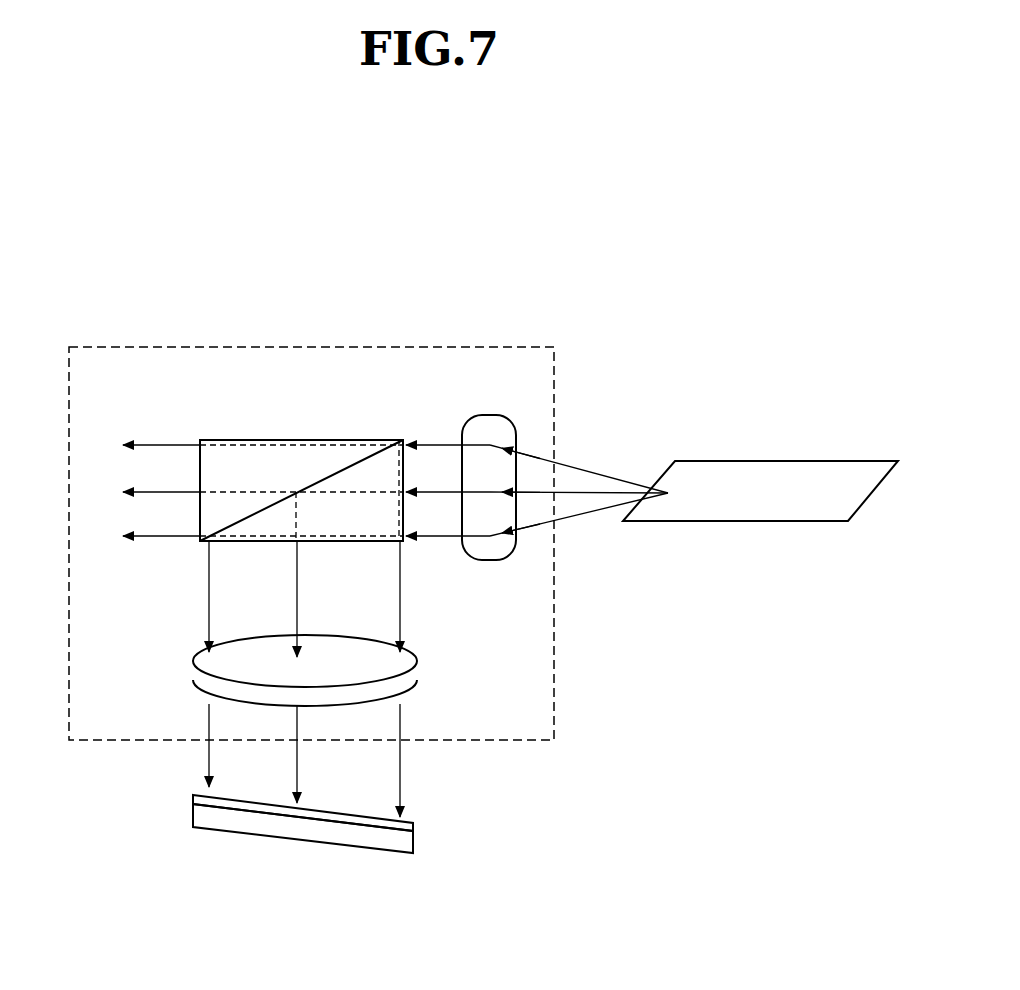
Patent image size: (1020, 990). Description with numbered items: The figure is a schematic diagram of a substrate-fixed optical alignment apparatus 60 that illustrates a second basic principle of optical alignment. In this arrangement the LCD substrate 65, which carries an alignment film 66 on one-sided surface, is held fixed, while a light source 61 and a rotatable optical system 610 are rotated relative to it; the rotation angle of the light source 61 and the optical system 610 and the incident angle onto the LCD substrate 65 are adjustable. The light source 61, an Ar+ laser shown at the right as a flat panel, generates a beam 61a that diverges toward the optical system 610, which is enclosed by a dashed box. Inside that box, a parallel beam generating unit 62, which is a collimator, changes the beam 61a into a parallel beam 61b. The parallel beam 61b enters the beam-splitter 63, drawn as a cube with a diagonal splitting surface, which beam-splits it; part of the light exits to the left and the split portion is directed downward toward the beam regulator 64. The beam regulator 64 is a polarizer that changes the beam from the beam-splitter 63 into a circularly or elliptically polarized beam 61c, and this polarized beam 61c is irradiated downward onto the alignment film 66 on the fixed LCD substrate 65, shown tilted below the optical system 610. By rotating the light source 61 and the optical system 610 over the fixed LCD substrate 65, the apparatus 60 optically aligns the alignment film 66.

The optical alignment apparatus 60 is at (497, 300).
The optical system 610 is at (162, 347).
The light source 61 is at (745, 521).
The beam 61a is at (585, 468).
The parallel beam 61b is at (437, 440).
The polarized beam 61c is at (400, 770).
The parallel beam generating unit 62 is at (490, 560).
The beam-splitter 63 is at (292, 440).
The beam regulator 64 is at (415, 678).
The LCD substrate 65 is at (415, 848).
The alignment film 66 is at (415, 822).